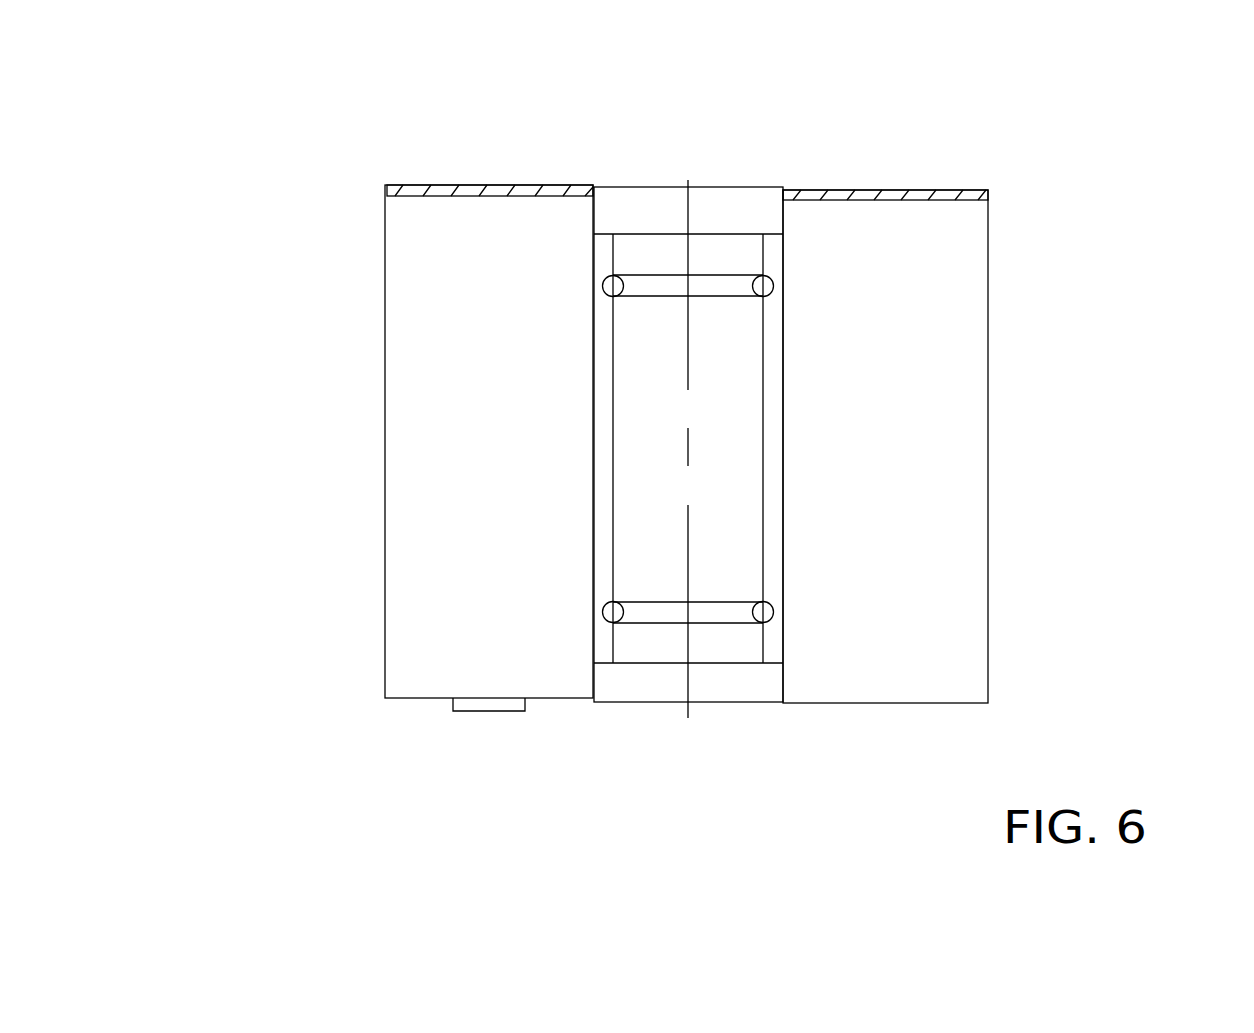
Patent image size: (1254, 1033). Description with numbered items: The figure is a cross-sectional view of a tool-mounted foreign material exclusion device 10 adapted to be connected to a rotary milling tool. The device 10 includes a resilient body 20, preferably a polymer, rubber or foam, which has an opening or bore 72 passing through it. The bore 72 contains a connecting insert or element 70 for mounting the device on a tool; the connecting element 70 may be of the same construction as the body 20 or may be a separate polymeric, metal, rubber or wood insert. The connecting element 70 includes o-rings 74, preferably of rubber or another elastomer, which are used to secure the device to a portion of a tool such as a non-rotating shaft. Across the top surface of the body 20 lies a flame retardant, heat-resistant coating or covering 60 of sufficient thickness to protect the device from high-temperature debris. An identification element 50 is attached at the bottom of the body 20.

The foreign material exclusion device 10 is at (382, 444).
The resilient body 20 is at (447, 373).
The identification element 50 is at (528, 714).
The coating or covering 60 is at (483, 185).
The connecting element 70 is at (748, 187).
The opening or bore 72 is at (722, 535).
The o-ring 74 is at (695, 300).